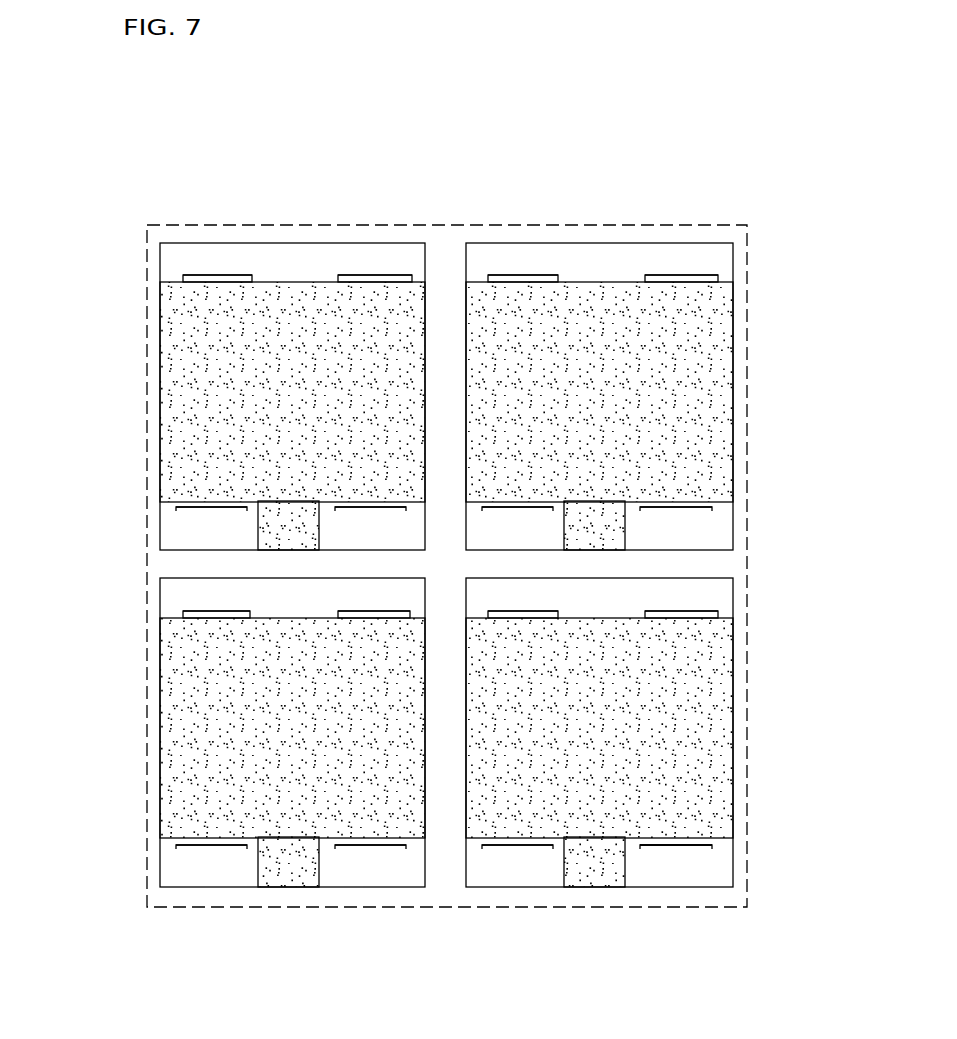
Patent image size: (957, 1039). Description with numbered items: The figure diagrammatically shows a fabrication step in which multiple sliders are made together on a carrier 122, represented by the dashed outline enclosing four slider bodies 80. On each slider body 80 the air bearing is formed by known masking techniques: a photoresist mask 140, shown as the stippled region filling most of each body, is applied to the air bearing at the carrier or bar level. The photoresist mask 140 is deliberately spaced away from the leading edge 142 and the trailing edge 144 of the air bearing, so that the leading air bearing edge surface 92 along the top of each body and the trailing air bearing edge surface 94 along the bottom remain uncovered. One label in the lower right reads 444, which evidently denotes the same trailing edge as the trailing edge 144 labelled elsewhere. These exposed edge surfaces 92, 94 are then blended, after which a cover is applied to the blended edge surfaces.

The carrier 122 is at (745, 246).
The slider body 80 is at (168, 520).
The photoresist mask 140 is at (178, 384).
The leading air bearing edge surface 92 is at (255, 270).
The leading edge 142 is at (201, 275).
The trailing edge 144 is at (210, 511).
The lower electrode contact (labelled 444) 444 is at (675, 849).
The trailing air bearing edge surface 94 is at (240, 511).